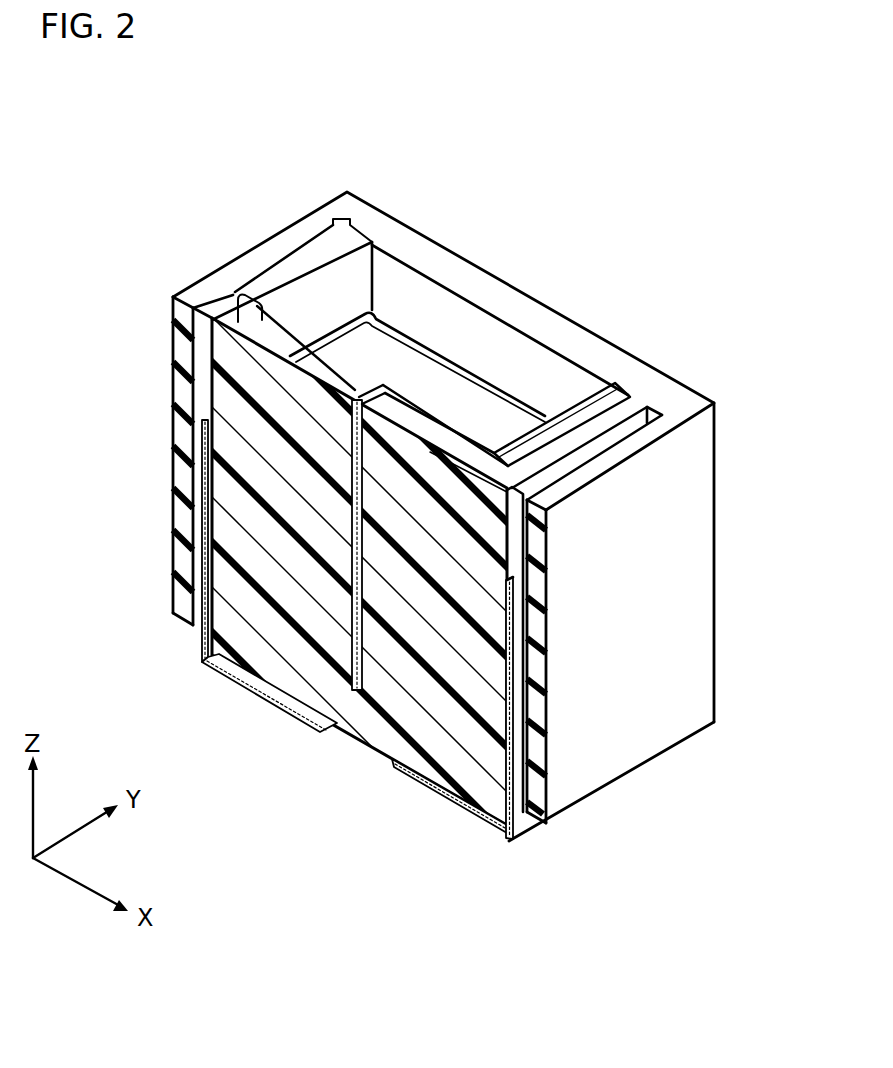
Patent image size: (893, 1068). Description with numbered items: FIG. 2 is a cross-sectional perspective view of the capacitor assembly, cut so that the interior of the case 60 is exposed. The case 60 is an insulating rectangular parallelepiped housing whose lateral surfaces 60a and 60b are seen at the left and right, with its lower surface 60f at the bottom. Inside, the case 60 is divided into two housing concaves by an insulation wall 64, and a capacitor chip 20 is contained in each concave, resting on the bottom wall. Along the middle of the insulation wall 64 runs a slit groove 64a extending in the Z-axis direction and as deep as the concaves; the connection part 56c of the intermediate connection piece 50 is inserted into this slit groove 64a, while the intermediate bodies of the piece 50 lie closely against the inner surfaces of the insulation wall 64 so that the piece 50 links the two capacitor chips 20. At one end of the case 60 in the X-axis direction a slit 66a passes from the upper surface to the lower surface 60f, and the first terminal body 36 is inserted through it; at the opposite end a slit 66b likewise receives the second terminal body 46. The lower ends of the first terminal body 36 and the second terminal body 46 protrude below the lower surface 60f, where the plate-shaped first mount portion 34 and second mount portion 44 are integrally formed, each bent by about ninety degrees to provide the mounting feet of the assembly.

The capacitor chip 20 is at (447, 374).
The first mount portion 34 is at (240, 688).
The first terminal body 36 is at (203, 527).
The second mount portion 44 is at (482, 822).
The second terminal body 46 is at (517, 677).
The intermediate connection piece 50 is at (464, 422).
The connection part 56c is at (352, 690).
The case 60 is at (556, 302).
The lateral surface 60a is at (172, 415).
The lateral surface 60b is at (590, 767).
The lower surface 60f is at (393, 763).
The insulation wall 64 is at (338, 372).
The slit groove 64a is at (347, 595).
The slit 66a is at (216, 306).
The slit 66b is at (637, 423).